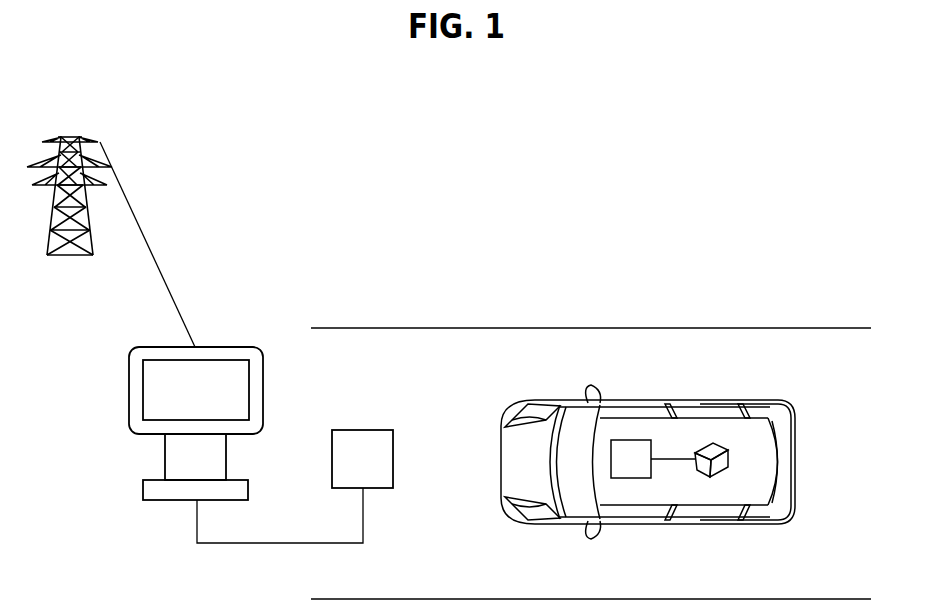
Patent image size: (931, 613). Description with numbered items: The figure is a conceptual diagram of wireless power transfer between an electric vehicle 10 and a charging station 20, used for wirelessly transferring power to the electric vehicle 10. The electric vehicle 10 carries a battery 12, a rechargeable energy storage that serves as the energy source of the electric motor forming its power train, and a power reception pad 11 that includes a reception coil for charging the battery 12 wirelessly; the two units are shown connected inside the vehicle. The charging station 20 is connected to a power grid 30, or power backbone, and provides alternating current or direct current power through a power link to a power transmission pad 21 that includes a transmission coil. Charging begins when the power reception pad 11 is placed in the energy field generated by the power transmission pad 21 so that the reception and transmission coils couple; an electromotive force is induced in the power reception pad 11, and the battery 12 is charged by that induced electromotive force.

The electric vehicle 10 is at (663, 401).
The power reception pad 11 is at (627, 440).
The battery 12 is at (712, 443).
The charging station 20 is at (222, 347).
The power transmission pad 21 is at (360, 430).
The power grid 30 is at (68, 137).